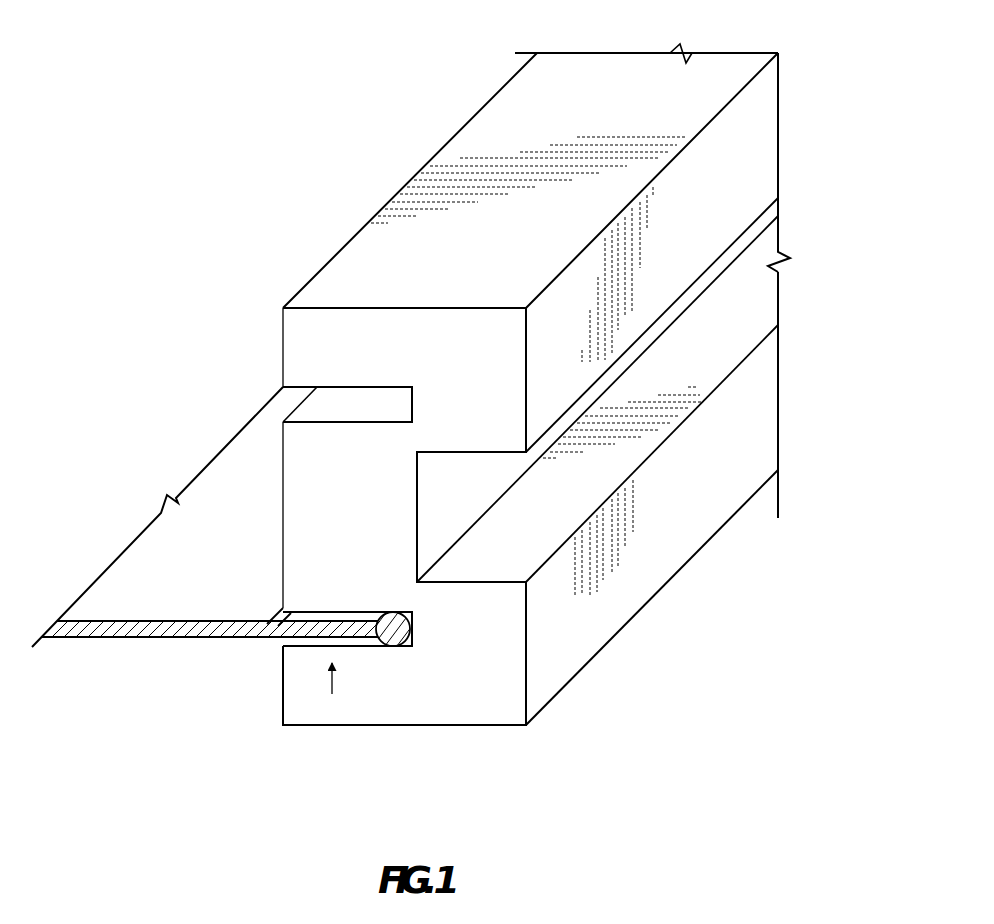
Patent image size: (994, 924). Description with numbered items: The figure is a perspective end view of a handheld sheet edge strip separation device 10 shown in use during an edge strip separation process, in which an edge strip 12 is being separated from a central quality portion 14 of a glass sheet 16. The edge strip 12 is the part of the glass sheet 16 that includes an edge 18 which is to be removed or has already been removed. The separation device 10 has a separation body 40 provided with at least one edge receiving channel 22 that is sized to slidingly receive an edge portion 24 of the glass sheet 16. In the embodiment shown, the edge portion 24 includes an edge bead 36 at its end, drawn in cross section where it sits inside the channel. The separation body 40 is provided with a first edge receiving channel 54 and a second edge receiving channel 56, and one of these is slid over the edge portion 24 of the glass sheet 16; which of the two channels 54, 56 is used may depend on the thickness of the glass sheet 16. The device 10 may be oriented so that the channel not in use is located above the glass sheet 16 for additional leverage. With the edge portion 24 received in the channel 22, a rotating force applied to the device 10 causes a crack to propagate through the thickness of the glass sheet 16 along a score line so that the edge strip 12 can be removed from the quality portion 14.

The handheld sheet edge strip separation device 10 is at (358, 70).
The edge strip 12 is at (360, 670).
The central quality portion 14 is at (97, 670).
The glass sheet 16 is at (145, 455).
The edge 18 is at (413, 627).
The edge receiving channel 22 is at (296, 668).
The edge portion 24 is at (285, 638).
The edge bead 36 is at (393, 611).
The separation body 40 is at (738, 174).
The first edge receiving channel 54 is at (426, 362).
The second edge receiving channel 56 is at (308, 680).